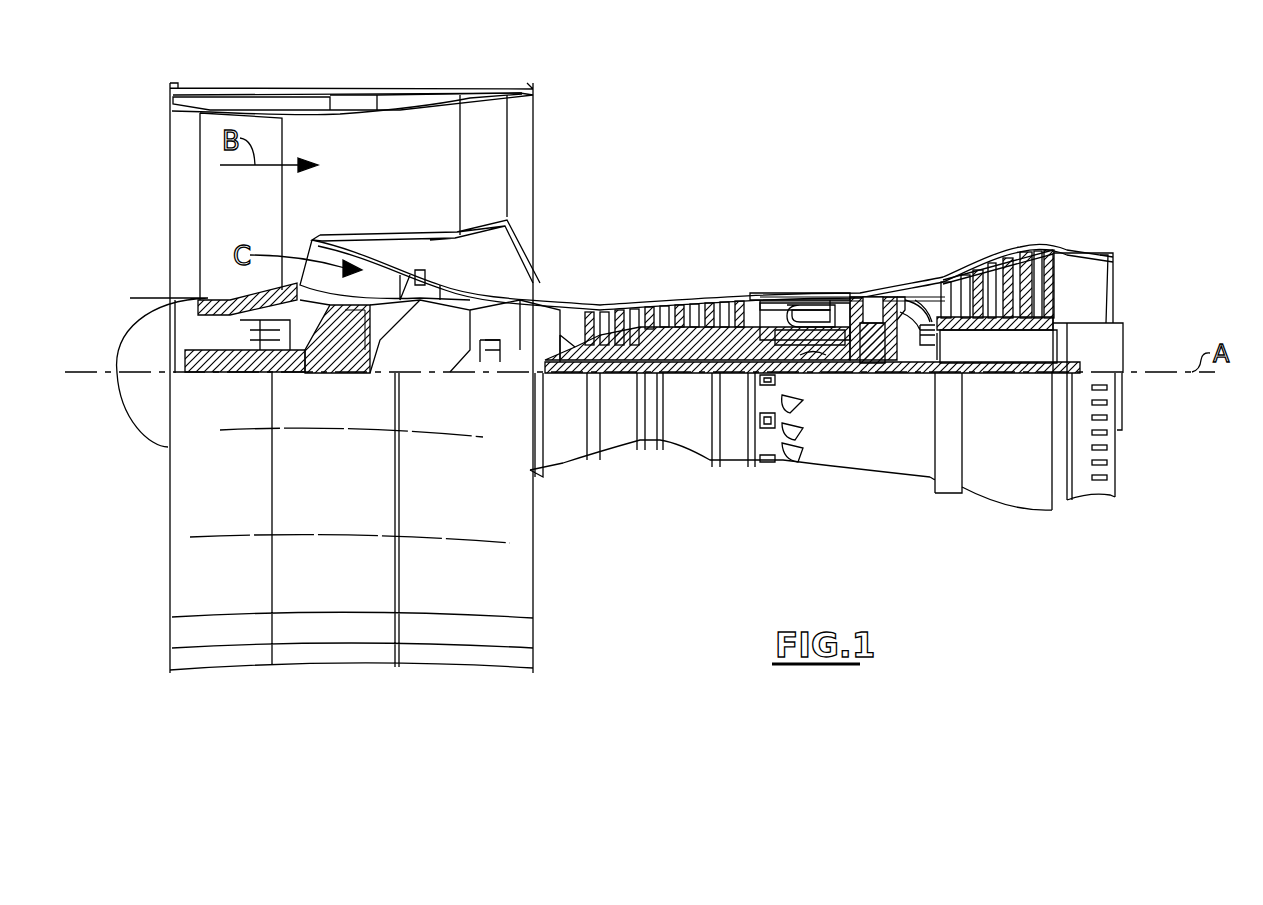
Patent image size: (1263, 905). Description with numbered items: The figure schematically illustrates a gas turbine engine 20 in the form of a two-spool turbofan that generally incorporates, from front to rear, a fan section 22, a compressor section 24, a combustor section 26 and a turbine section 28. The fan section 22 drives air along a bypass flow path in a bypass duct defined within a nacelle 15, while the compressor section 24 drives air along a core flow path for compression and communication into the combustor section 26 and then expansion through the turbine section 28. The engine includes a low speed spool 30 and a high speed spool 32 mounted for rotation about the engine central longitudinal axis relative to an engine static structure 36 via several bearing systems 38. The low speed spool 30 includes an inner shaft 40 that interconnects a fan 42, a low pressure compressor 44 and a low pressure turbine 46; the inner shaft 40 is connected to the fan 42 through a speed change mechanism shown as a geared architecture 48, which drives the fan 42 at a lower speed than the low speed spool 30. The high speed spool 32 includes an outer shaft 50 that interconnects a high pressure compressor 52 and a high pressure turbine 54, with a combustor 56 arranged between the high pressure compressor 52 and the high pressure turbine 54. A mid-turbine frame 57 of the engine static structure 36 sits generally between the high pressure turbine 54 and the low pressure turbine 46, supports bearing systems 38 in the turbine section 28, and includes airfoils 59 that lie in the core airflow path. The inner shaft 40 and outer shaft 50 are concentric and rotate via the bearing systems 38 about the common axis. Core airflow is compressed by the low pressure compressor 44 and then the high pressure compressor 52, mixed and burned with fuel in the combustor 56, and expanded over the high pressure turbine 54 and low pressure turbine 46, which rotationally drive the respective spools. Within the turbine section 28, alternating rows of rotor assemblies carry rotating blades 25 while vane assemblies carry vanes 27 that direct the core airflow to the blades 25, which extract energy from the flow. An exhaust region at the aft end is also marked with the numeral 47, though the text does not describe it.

The nacelle 15 is at (350, 91).
The gas turbine engine 20 is at (818, 132).
The fan section 22 is at (280, 72).
The compressor section 24 is at (578, 280).
The rotating blades 25 is at (874, 292).
The combustor section 26 is at (806, 262).
The vanes 27 is at (868, 300).
The turbine section 28 is at (969, 212).
The low speed spool 30 is at (692, 385).
The high speed spool 32 is at (735, 297).
The engine static structure 36 is at (731, 470).
The bearing systems 38 is at (492, 357).
The inner shaft 40 is at (550, 376).
The fan 42 is at (241, 206).
The low pressure compressor 44 is at (457, 287).
The low pressure turbine 46 is at (998, 252).
The engine nozzle 47 is at (1103, 250).
The geared architecture 48 is at (360, 357).
The outer shaft 50 is at (813, 353).
The high pressure compressor 52 is at (667, 337).
The high pressure turbine 54 is at (873, 300).
The combustor 56 is at (808, 317).
The mid-turbine frame 57 is at (922, 275).
The airfoils 59 is at (927, 312).